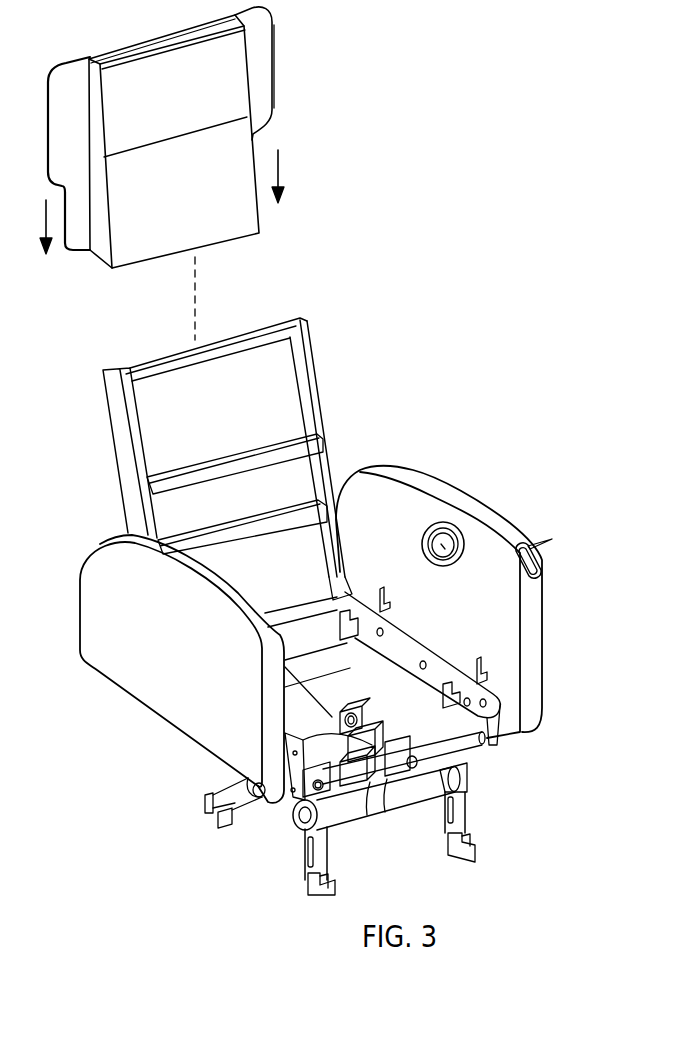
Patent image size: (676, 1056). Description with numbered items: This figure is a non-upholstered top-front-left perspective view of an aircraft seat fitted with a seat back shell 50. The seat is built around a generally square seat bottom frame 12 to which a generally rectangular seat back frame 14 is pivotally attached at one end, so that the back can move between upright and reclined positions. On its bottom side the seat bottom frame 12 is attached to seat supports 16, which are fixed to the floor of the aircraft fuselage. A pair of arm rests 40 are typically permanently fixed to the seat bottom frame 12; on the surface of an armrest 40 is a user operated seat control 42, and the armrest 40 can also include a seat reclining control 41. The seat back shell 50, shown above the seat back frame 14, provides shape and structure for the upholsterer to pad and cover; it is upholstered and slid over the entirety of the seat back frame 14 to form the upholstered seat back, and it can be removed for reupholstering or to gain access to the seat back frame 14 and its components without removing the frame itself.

The seat bottom frame 12 is at (493, 740).
The seat back frame 14 is at (322, 417).
The seat supports 16 is at (220, 802).
The arm rests 40 is at (112, 567).
The seat reclining control 41 is at (428, 528).
The user operated seat control 42 is at (532, 543).
The seat back shell 50 is at (313, 96).